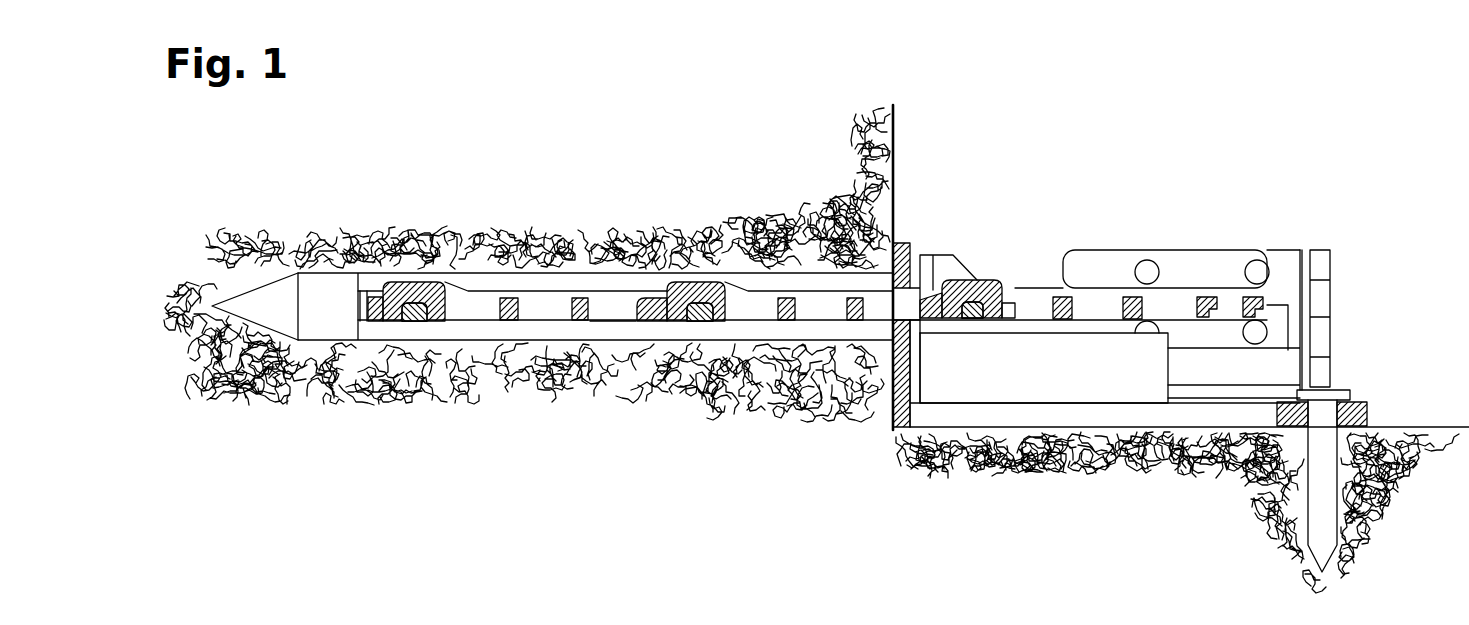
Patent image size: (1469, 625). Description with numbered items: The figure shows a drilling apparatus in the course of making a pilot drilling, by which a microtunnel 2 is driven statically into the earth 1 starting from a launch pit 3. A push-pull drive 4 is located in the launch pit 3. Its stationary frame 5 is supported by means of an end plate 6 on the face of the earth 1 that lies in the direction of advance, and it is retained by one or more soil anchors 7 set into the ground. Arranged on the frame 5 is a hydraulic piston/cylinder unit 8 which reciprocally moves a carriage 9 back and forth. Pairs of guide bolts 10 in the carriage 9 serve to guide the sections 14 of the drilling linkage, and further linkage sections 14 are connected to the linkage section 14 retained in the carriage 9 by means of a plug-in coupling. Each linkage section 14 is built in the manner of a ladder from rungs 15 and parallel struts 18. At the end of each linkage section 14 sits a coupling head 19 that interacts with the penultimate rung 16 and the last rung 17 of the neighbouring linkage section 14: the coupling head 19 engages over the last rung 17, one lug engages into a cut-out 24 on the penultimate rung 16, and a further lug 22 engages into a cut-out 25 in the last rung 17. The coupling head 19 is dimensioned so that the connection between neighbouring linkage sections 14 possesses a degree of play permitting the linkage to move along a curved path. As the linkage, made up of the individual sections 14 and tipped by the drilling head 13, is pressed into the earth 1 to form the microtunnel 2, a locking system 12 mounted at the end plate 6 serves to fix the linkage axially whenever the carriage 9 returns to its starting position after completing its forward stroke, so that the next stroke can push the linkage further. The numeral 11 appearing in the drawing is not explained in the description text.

The earth 1 is at (310, 243).
The microtunnel 2 is at (582, 282).
The launch pit 3 is at (1047, 162).
The push-pull drive 4 is at (1369, 266).
The stationary frame 5 is at (967, 413).
The end plate 6 is at (905, 243).
The soil anchor 7 is at (1343, 392).
The hydraulic piston/cylinder unit 8 is at (1052, 380).
The carriage 9 is at (1290, 267).
The guide bolts 10 is at (1250, 320).
The rod section 11 is at (1012, 287).
The locking system 12 is at (930, 268).
The drilling head 13 is at (275, 305).
The linkage section 14 is at (540, 297).
The rung 15 is at (512, 322).
The penultimate rung 16 is at (577, 322).
The last rung 17 is at (648, 322).
The parallel struts 18 is at (612, 308).
The coupling head 19 is at (415, 290).
The lug 22 is at (703, 322).
The cut-out 24 is at (1212, 312).
The cut-out 25 is at (1272, 312).